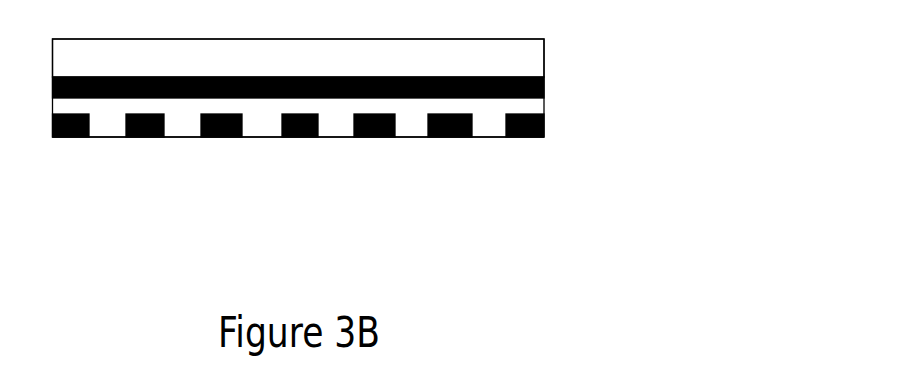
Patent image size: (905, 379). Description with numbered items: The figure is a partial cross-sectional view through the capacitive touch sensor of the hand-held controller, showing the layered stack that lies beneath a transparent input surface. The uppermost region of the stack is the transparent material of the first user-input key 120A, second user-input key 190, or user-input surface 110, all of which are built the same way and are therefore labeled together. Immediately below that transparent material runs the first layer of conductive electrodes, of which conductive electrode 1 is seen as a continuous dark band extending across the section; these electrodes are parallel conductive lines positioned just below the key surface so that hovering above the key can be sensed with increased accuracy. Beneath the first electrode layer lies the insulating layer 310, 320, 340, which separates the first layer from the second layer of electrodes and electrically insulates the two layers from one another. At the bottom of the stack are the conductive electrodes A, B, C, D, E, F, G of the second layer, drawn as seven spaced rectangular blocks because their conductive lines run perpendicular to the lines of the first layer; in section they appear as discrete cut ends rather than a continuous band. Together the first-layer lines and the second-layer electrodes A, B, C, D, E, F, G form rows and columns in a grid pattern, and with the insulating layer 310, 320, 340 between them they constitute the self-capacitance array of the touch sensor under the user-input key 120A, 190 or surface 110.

The conductive electrode of the first layer 1 is at (372, 115).
The first user-input key 120A is at (389, 58).
The second user-input key 190 is at (389, 58).
The user-input surface 110 is at (531, 63).
The insulating layer 310 is at (389, 134).
The insulating layer 320 is at (389, 134).
The insulating layer 340 is at (389, 134).
The conductive electrode of the second layer A is at (76, 137).
The conductive electrode of the second layer B is at (142, 137).
The conductive electrode of the second layer C is at (223, 137).
The conductive electrode of the second layer D is at (297, 137).
The conductive electrode of the second layer E is at (377, 137).
The conductive electrode of the second layer F is at (444, 137).
The conductive electrode of the second layer G is at (525, 137).